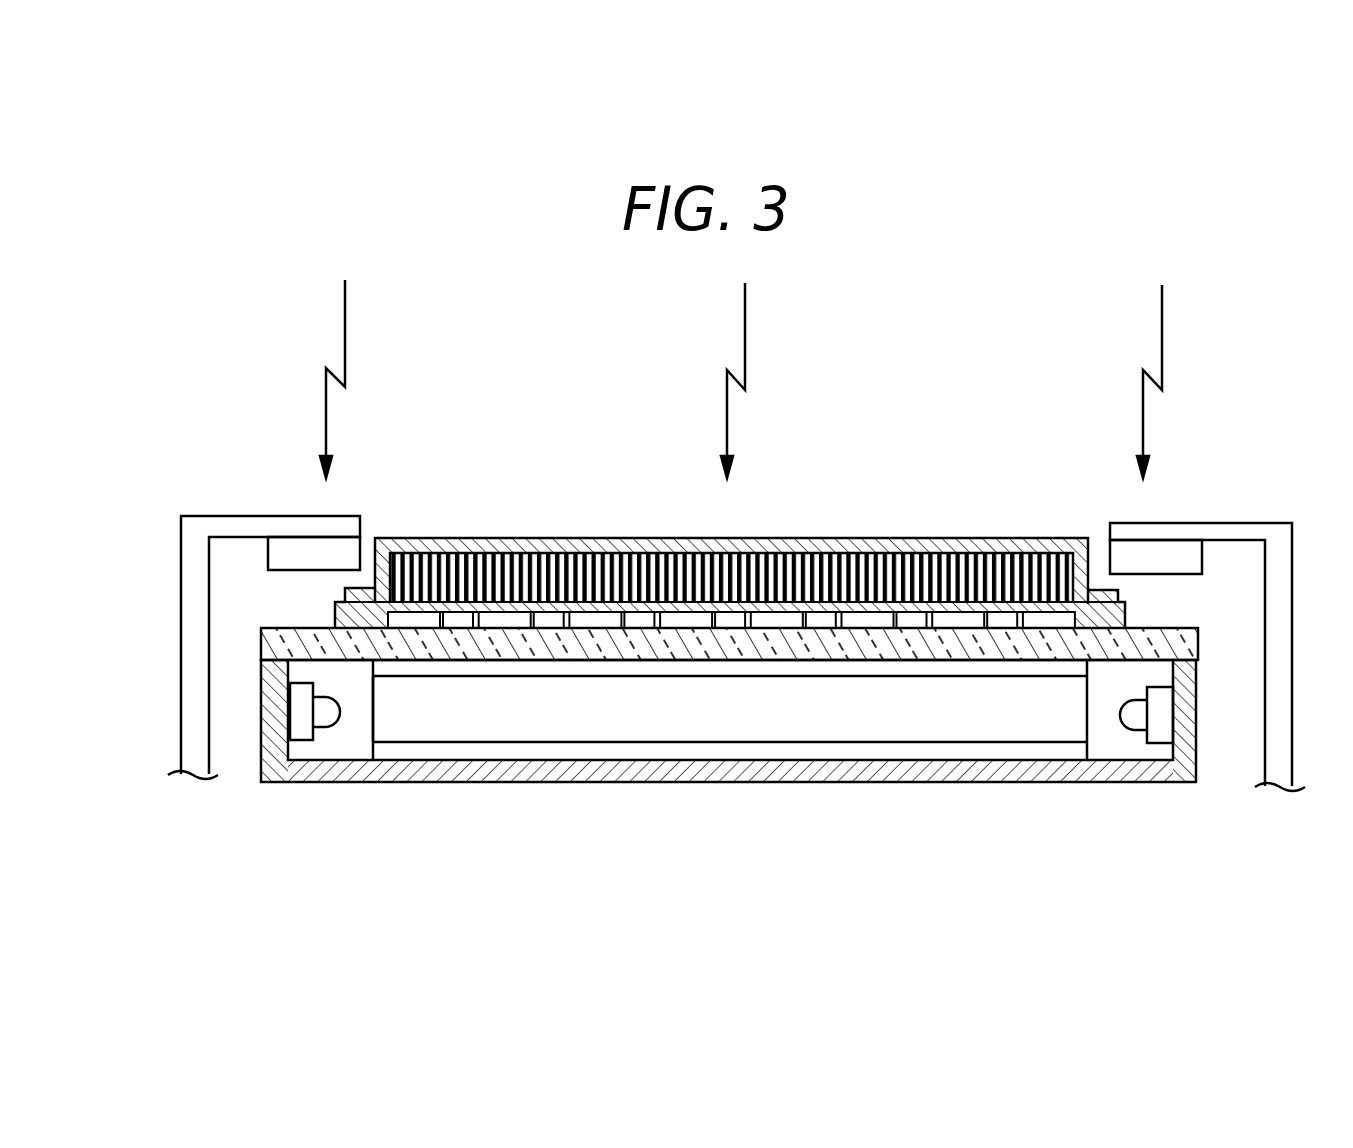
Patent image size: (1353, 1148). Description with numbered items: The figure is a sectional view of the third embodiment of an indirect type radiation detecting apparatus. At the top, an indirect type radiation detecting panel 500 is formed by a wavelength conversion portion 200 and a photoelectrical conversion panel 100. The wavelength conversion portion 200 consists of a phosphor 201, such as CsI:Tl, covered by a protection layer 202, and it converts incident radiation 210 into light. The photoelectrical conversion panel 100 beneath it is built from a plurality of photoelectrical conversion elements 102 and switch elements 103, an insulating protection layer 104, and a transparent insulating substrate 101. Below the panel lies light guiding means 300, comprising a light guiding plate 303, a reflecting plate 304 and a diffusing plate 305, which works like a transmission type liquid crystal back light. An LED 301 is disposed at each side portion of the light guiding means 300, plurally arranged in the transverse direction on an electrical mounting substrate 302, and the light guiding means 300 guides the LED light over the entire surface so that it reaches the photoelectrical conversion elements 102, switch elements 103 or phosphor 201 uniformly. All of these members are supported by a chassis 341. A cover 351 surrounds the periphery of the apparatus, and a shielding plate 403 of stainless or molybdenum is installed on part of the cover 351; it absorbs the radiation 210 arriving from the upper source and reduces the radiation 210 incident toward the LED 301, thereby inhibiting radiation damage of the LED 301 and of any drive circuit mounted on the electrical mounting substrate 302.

The photoelectrical conversion panel 100 is at (160, 593).
The transparent insulating substrate 101 is at (1183, 628).
The photoelectrical conversion elements 102 is at (1060, 623).
The switch elements 103 is at (1008, 605).
The insulating protection layer 104 is at (342, 606).
The wavelength conversion portion 200 is at (160, 530).
The phosphor 201 is at (797, 565).
The protection layer 202 is at (935, 546).
The radiation 210 is at (748, 337).
The light guiding means 300 is at (728, 845).
The LED 301 is at (327, 713).
The electrical mounting substrate 302 is at (297, 735).
The light guiding plate 303 is at (480, 722).
The reflecting plate 304 is at (596, 745).
The diffusing plate 305 is at (695, 663).
The chassis 341 is at (955, 770).
The cover 351 is at (230, 524).
The shielding plate 403 is at (333, 542).
The indirect type radiation detecting panel 500 is at (98, 522).